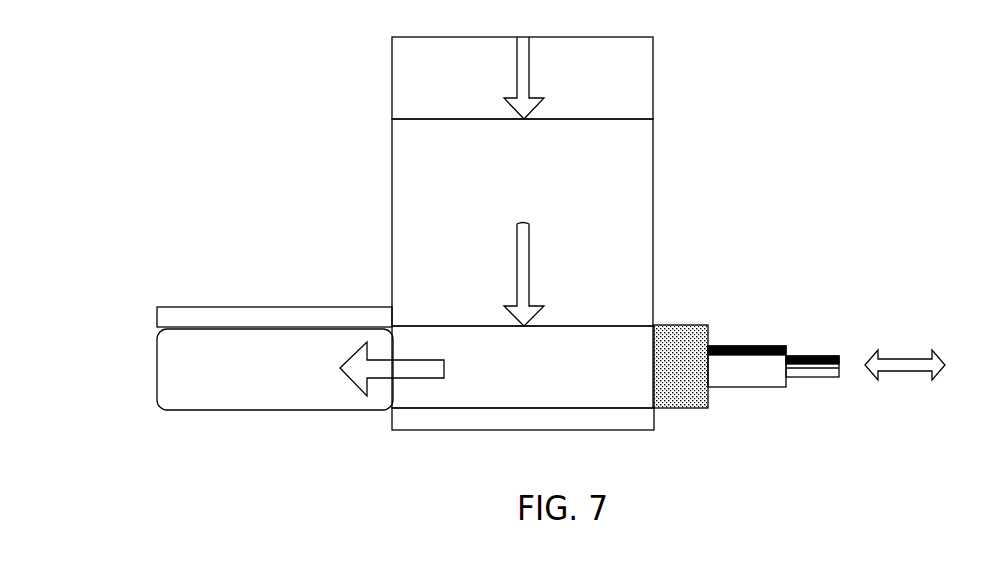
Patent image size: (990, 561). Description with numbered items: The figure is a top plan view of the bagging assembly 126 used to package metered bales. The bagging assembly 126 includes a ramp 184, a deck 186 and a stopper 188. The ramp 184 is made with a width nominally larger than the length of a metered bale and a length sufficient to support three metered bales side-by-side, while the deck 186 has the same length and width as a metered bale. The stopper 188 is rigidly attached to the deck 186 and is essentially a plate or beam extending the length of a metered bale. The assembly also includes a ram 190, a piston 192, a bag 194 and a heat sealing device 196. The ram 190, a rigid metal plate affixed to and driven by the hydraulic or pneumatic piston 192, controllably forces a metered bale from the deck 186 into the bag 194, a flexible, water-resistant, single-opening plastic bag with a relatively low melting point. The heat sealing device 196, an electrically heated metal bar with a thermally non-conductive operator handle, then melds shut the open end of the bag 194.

The bagging assembly 126 is at (700, 212).
The ramp 184 is at (553, 188).
The deck 186 is at (570, 390).
The stopper 188 is at (543, 425).
The ram 190 is at (680, 325).
The piston 192 is at (760, 366).
The bag 194 is at (209, 383).
The heat sealing device 196 is at (360, 315).